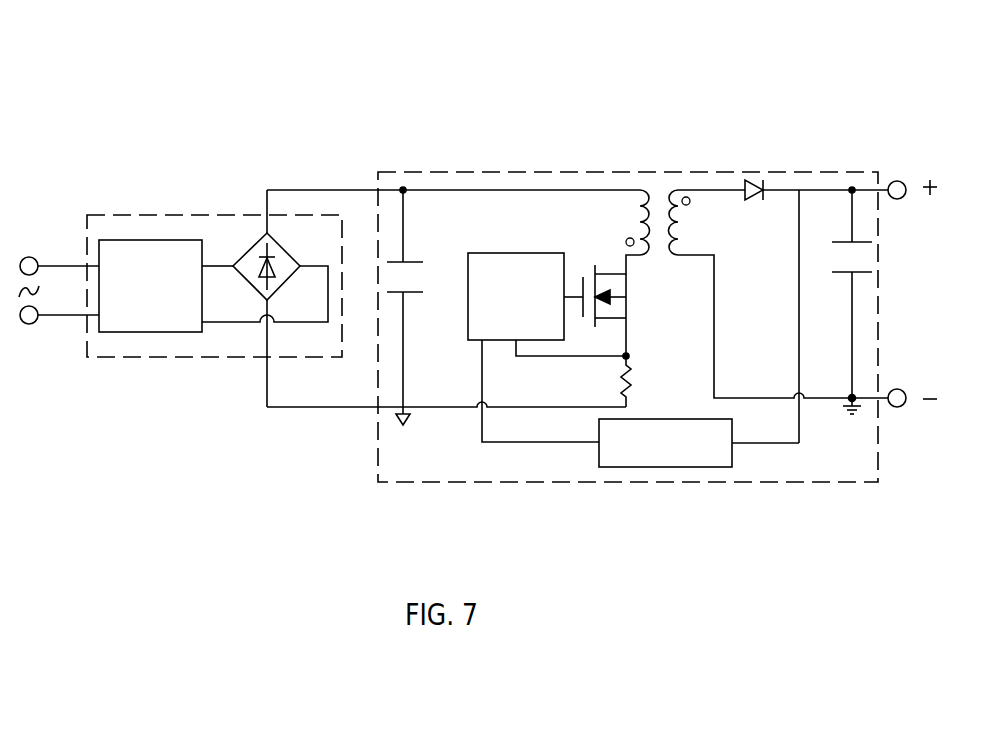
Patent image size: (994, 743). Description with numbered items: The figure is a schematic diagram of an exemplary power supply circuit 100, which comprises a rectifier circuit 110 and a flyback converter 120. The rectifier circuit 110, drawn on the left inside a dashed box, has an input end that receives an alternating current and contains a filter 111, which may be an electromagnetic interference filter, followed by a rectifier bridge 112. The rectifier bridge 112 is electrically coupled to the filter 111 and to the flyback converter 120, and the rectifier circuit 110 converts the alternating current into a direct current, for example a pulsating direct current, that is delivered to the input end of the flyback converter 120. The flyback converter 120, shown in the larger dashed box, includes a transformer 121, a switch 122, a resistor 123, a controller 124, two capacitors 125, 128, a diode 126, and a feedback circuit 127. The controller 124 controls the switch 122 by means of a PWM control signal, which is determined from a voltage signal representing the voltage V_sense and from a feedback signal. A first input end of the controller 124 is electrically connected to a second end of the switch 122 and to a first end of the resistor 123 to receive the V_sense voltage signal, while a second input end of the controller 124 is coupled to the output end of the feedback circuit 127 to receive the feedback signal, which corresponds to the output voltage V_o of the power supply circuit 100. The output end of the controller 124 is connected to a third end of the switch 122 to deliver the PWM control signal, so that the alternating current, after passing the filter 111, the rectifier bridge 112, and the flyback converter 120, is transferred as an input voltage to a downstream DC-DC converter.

The power supply circuit 100 is at (92, 40).
The rectifier circuit 110 is at (180, 262).
The filter 111 is at (100, 250).
The rectifier bridge 112 is at (252, 248).
The flyback converter 120 is at (626, 306).
The transformer 121 is at (652, 224).
The switch 122 is at (627, 297).
The resistor 123 is at (620, 383).
The controller 124 is at (498, 232).
The capacitor 125 is at (415, 262).
The diode 126 is at (750, 193).
The feedback circuit 127 is at (705, 419).
The capacitor 128 is at (843, 272).